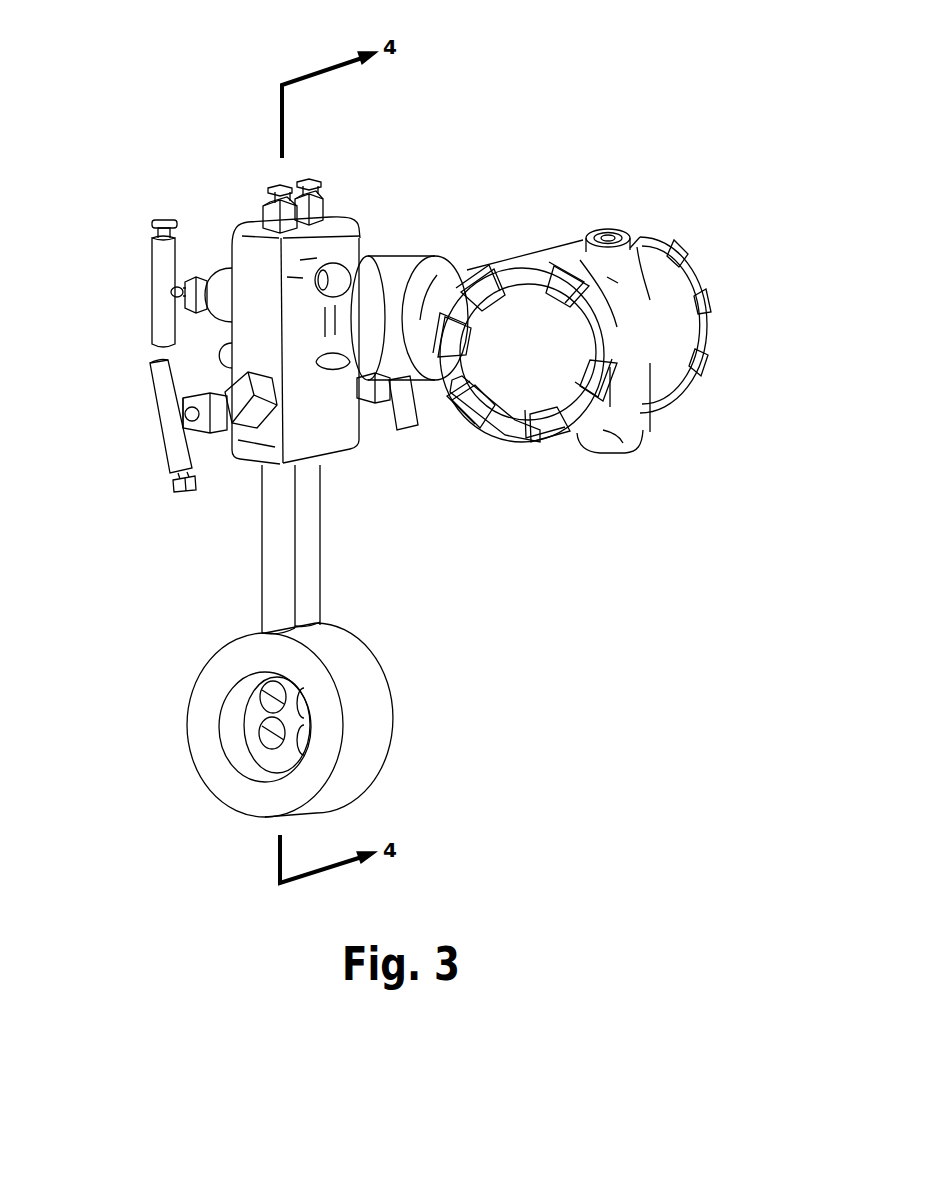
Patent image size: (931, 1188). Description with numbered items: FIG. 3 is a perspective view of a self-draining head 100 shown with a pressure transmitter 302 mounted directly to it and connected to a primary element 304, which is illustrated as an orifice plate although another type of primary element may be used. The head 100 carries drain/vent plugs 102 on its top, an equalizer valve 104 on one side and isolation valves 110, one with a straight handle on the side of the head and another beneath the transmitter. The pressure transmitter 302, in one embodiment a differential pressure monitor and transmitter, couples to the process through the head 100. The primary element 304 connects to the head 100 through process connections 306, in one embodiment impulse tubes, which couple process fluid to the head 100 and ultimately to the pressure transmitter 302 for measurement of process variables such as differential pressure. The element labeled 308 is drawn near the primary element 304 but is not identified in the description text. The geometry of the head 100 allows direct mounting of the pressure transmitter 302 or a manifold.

The self-draining head 100 is at (497, 128).
The drain/vent plugs 102 is at (275, 187).
The equalizer valve 104 is at (150, 258).
The isolation valves 110 is at (148, 408).
The pressure transmitter 302 is at (561, 240).
The primary element 304 is at (398, 757).
The process connections 306 is at (322, 576).
The flow passage 308 is at (392, 710).